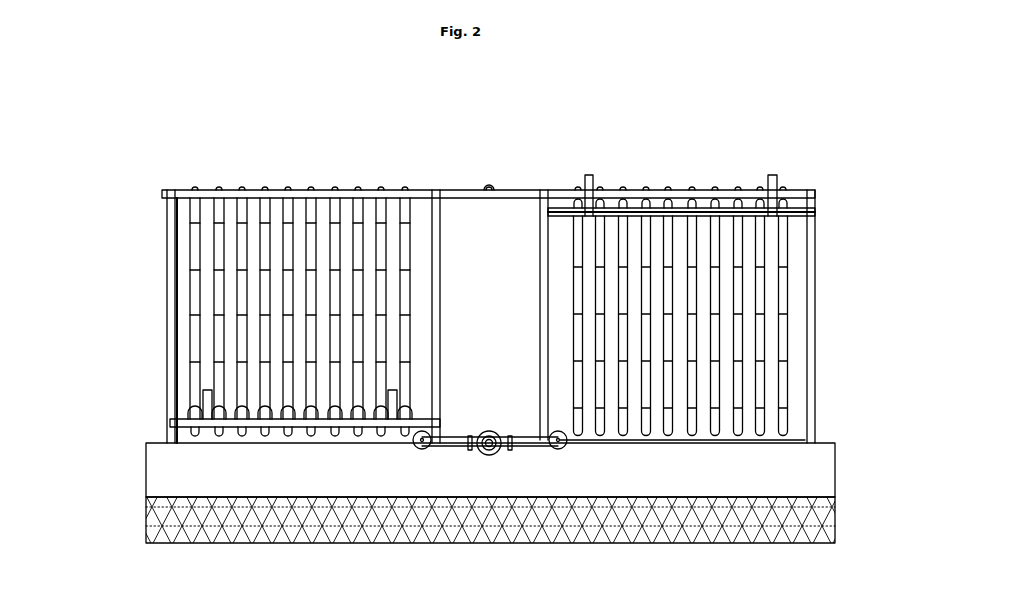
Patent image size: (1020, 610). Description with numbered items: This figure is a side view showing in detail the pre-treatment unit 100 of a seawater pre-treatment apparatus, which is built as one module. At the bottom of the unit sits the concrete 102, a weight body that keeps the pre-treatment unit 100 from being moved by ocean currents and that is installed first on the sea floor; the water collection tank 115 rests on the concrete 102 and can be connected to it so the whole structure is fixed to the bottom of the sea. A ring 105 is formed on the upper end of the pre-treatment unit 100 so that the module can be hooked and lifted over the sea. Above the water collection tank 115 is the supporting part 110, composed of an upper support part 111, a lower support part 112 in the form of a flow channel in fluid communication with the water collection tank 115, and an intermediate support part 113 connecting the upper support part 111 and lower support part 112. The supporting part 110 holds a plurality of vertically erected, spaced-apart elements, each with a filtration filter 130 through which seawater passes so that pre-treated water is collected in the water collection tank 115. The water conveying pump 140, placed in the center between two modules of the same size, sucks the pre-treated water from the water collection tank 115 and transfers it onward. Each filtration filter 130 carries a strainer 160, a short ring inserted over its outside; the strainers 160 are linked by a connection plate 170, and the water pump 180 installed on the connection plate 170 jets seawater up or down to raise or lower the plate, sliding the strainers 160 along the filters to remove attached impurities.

The pre-treatment unit 100 is at (873, 107).
The concrete 102 is at (835, 512).
The ring 105 is at (492, 181).
The supporting part 110 is at (431, 316).
The upper support part 111 is at (185, 199).
The lower support part 112 is at (168, 360).
The intermediate support part 113 is at (168, 318).
The water collection tank 115 is at (833, 469).
The filtration filter 130 is at (206, 205).
The water conveying pump 140 is at (492, 430).
The strainer 160 is at (578, 206).
The connection plate 170 is at (556, 224).
The water pump 180 is at (594, 180).